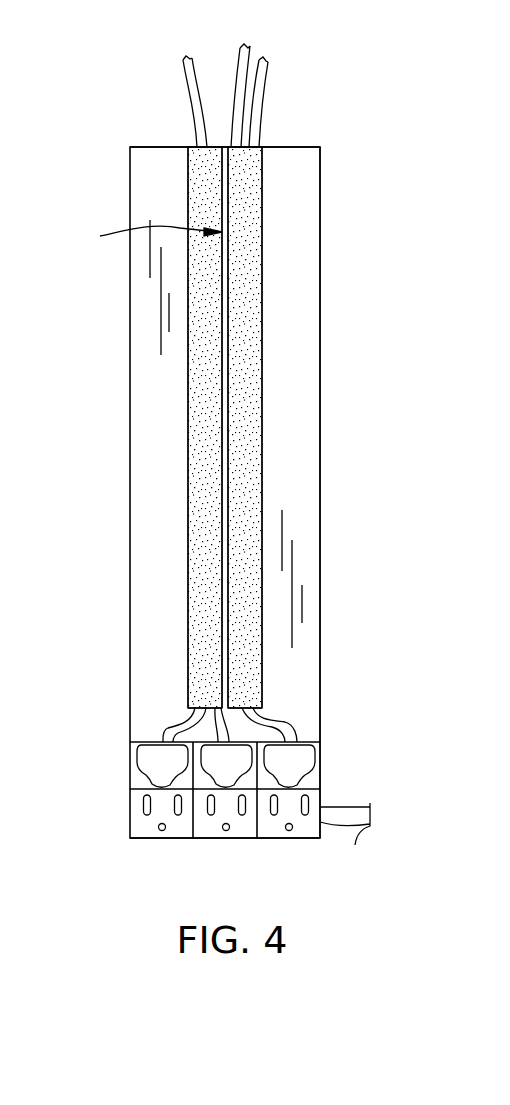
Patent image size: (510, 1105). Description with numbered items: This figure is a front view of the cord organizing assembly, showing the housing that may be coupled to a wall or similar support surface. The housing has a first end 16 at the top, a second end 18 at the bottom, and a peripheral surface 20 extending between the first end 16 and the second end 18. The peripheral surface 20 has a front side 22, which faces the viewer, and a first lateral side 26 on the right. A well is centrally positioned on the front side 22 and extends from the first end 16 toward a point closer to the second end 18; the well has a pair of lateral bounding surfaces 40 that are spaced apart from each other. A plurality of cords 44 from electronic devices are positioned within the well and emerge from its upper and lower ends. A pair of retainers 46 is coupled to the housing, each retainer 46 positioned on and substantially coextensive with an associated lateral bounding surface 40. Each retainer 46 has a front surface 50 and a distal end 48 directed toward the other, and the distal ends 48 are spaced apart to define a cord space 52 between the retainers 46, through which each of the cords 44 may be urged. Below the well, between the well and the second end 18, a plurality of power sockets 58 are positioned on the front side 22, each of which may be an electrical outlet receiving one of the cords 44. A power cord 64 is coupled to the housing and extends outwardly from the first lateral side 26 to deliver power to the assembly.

The first end 16 is at (150, 147).
The second end 18 is at (165, 839).
The peripheral surface 20 is at (300, 307).
The front side 22 is at (137, 280).
The first lateral side 26 is at (318, 500).
The lateral bounding surfaces 40 is at (190, 168).
The cords 44 is at (262, 82).
The retainers 46 is at (243, 382).
The distal end 48 is at (222, 532).
The front surface 50 is at (242, 445).
The cord space 52 is at (137, 234).
The power sockets 58 is at (207, 806).
The power cord 64 is at (345, 807).